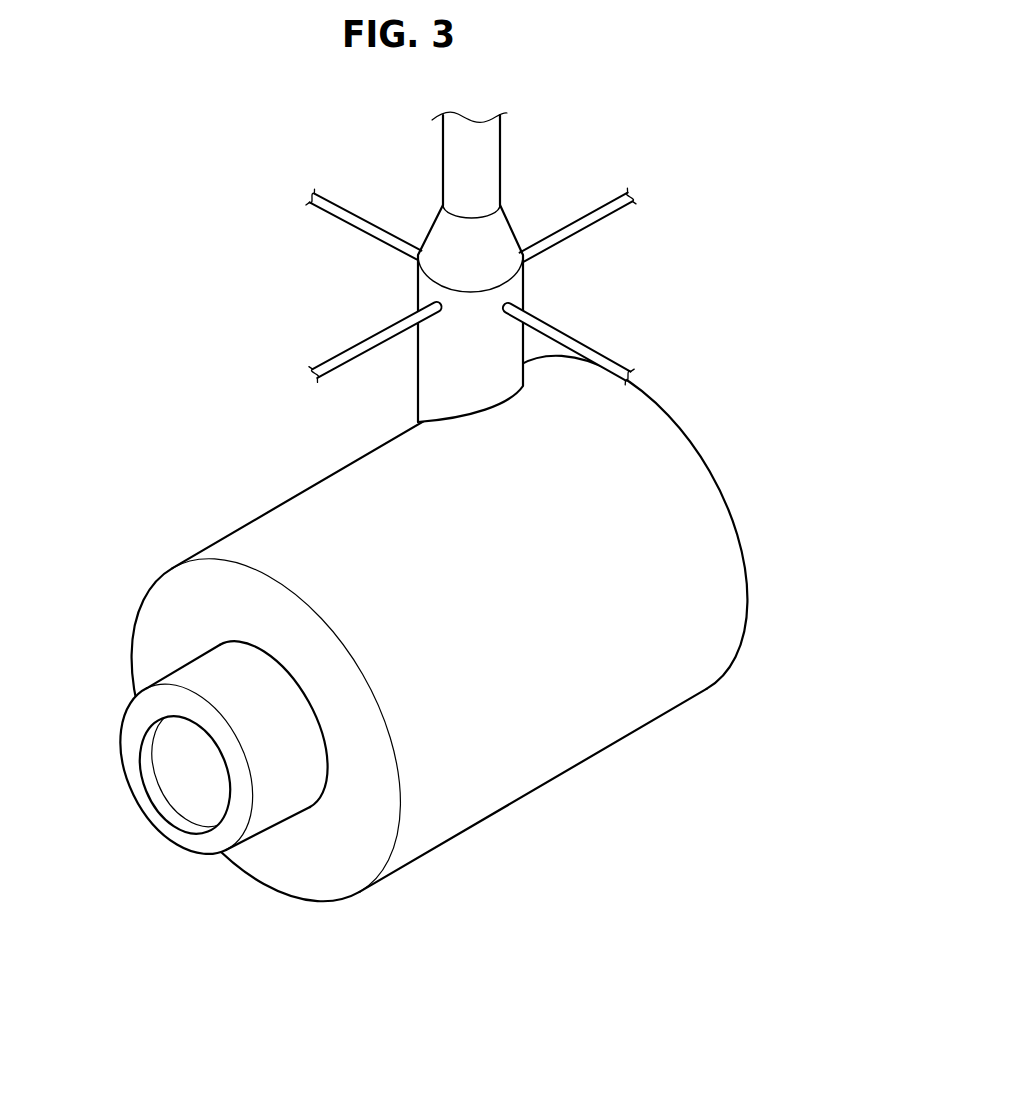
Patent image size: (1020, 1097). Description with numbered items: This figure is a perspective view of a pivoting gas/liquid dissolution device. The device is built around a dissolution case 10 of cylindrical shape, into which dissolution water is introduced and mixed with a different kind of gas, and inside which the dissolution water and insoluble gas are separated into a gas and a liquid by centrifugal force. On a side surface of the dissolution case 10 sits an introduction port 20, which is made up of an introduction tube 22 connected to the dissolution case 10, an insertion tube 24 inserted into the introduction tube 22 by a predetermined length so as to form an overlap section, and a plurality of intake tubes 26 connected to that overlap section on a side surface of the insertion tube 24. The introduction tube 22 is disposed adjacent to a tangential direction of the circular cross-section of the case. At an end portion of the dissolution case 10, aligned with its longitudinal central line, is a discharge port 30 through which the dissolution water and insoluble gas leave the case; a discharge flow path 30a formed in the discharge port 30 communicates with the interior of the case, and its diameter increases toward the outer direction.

The dissolution case 10 is at (540, 772).
The introduction port 20 is at (487, 260).
The introduction tube 22 is at (518, 290).
The insertion tube 24 is at (490, 168).
The intake tubes 26 is at (370, 340).
The discharge port 30 is at (186, 841).
The discharge flow path 30a is at (187, 777).